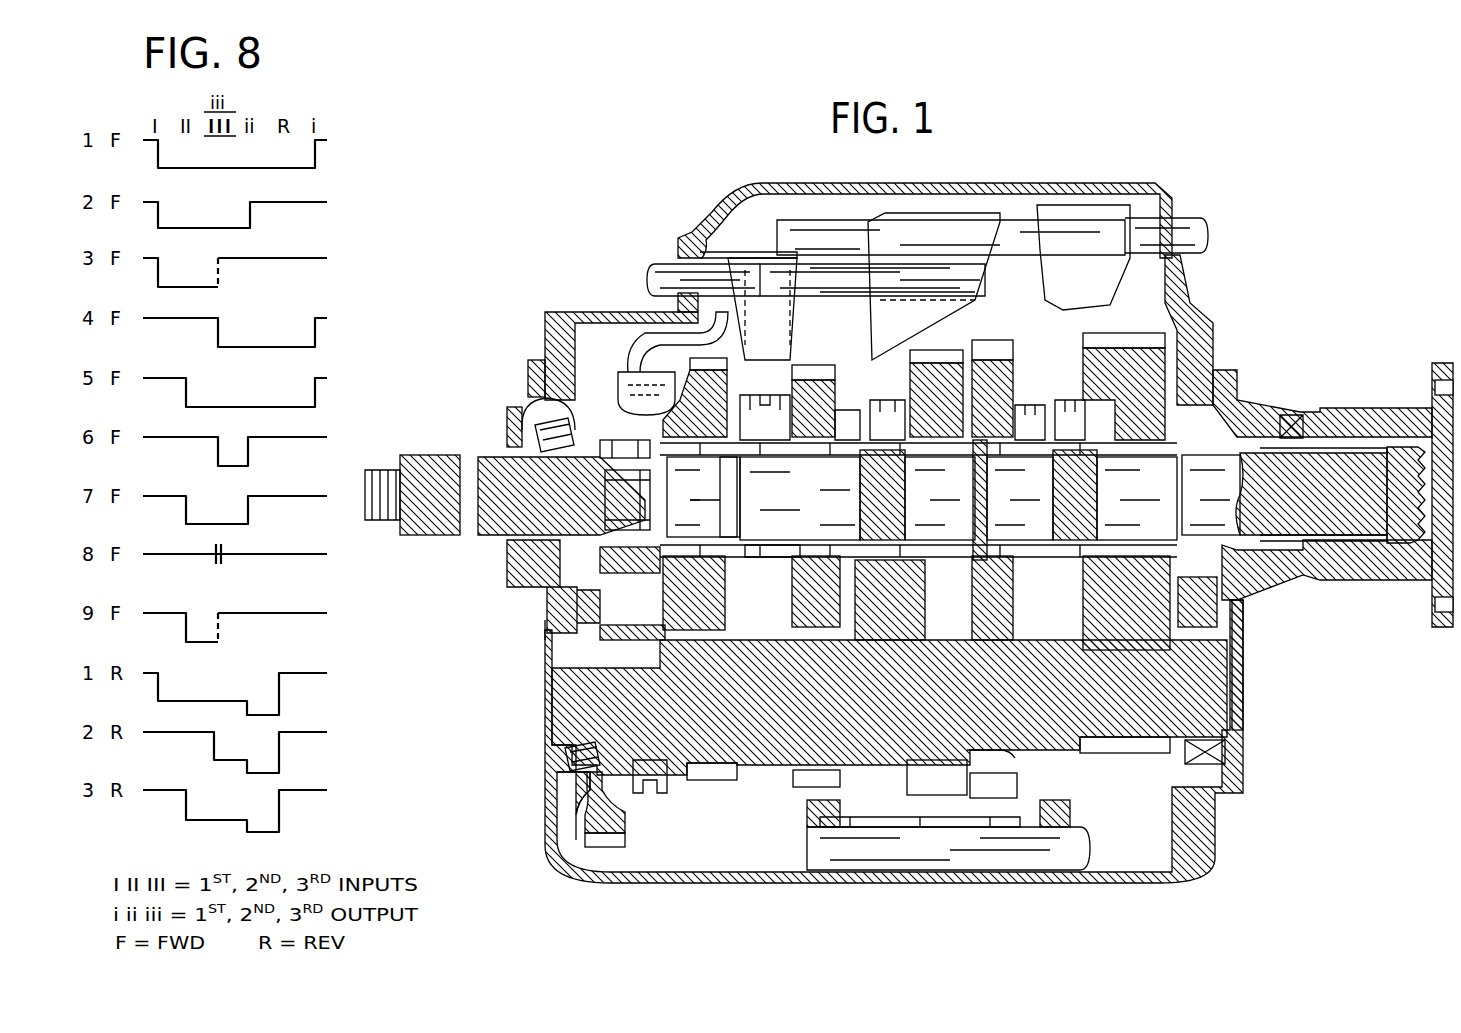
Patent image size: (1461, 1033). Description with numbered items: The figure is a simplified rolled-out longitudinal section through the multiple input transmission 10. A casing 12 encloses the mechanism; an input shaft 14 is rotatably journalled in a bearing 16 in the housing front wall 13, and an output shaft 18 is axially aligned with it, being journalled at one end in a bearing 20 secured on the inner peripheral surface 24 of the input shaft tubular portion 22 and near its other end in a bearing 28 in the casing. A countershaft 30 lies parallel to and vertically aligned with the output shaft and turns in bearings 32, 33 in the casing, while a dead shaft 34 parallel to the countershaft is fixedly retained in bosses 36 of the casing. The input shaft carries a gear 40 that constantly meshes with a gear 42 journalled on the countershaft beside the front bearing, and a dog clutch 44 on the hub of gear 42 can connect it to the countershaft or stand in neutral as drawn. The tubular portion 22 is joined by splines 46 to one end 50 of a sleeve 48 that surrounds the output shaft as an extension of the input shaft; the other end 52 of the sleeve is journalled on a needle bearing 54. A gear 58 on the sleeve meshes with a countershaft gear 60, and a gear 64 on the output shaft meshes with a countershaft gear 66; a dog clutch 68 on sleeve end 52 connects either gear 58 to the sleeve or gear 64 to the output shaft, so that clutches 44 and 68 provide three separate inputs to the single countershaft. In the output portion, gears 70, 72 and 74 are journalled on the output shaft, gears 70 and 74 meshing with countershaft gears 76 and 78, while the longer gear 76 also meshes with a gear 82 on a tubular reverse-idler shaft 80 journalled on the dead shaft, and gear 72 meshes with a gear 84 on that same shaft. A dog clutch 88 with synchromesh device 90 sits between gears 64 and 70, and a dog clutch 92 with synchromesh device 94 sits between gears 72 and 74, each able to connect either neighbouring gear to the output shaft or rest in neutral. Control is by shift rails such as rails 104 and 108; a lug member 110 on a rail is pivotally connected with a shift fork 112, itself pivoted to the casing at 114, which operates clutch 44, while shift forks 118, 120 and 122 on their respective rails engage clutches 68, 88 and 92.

The multiple input transmission 10 is at (574, 889).
The casing 12 is at (693, 884).
The housing front wall 13 is at (545, 800).
The input shaft 14 is at (432, 455).
The bearing 16 is at (530, 420).
The output shaft 18 is at (1325, 470).
The bearing 20 is at (590, 465).
The input shaft tubular portion 22 is at (628, 440).
The inner peripheral surface 24 is at (604, 458).
The bearing 28 is at (1235, 410).
The countershaft 30 is at (565, 690).
The bearing 32 is at (560, 755).
The bearing 33 is at (1230, 752).
The dead shaft 34 is at (918, 860).
The bosses 36 is at (807, 815).
The gear 40 is at (545, 395).
The gear 42 is at (613, 842).
The dog clutch 44 is at (652, 794).
The splines 46 is at (632, 520).
The sleeve 48 is at (725, 497).
The sleeve end 50 is at (702, 497).
The sleeve end 52 is at (800, 498).
The needle bearing 54 is at (766, 545).
The gear 58 is at (703, 368).
The gear 60 is at (716, 780).
The gear 64 is at (807, 372).
The gear 66 is at (793, 787).
The dog clutch 68 is at (750, 398).
The gear 70 is at (940, 352).
The gear 72 is at (998, 340).
The gear 74 is at (1124, 340).
The gear 76 is at (950, 763).
The gear 78 is at (1142, 753).
The reverse-idler shaft 80 is at (938, 820).
The gear 82 is at (912, 772).
The gear 84 is at (1005, 785).
The dog clutch 88 is at (905, 400).
The synchromesh device 90 is at (843, 410).
The dog clutch 92 is at (1075, 410).
The synchromesh device 94 is at (1025, 410).
The shift rail 104 is at (665, 270).
The shift rail 108 is at (1185, 232).
The lug member 110 is at (640, 343).
The shift fork 112 is at (690, 656).
The pivot connection 114 is at (680, 533).
The shift fork 118 is at (795, 300).
The shift fork 120 is at (872, 318).
The shift fork 122 is at (1115, 282).